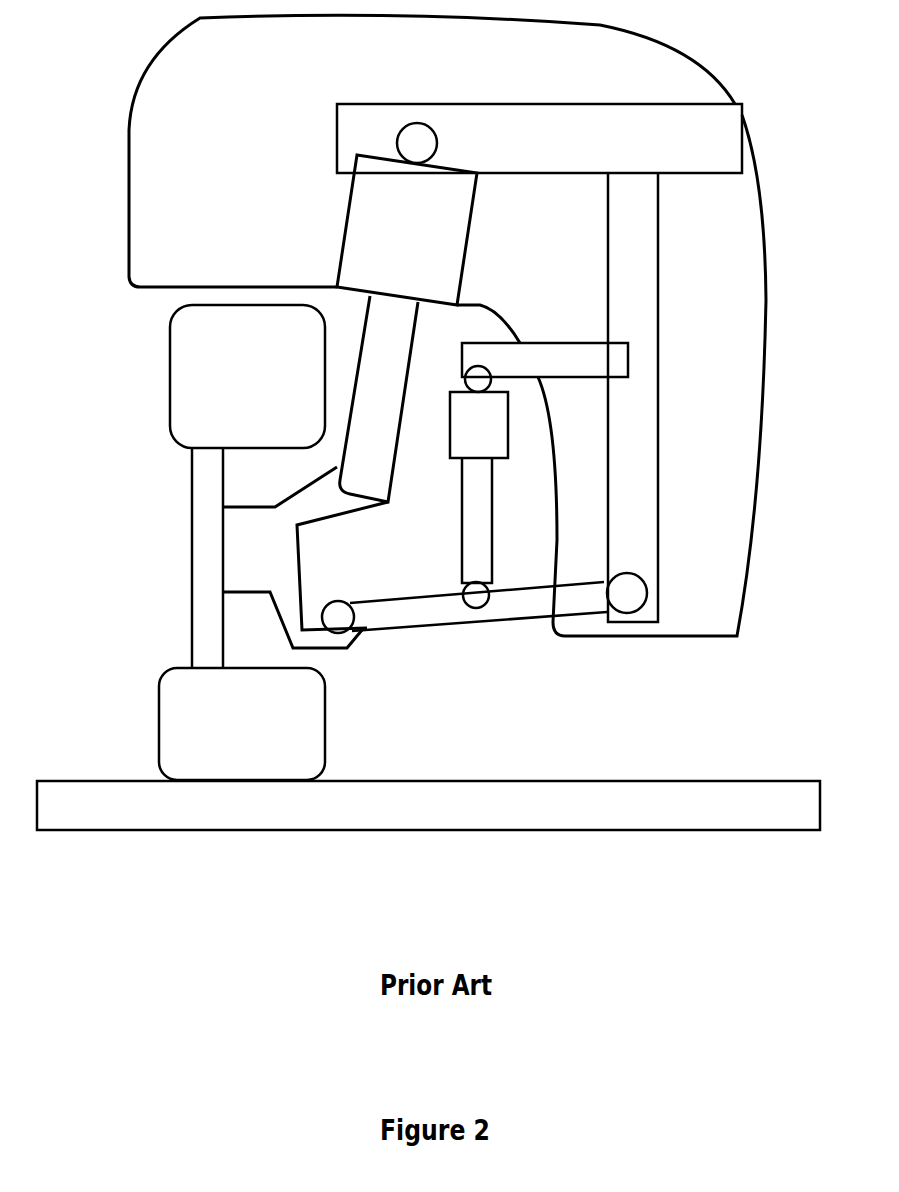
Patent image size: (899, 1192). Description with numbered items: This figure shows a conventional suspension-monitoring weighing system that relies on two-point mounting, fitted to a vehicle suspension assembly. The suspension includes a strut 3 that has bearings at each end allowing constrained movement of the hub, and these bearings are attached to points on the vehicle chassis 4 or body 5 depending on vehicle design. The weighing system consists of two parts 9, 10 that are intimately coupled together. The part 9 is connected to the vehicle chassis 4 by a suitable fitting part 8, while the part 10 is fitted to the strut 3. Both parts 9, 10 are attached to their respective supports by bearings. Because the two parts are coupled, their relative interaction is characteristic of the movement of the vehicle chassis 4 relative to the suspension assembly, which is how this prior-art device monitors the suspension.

The strut 3 is at (406, 632).
The vehicle chassis 4 is at (638, 290).
The body 5 is at (173, 229).
The fitting part 8 is at (584, 370).
The part 9 is at (516, 434).
The part 10 is at (506, 505).